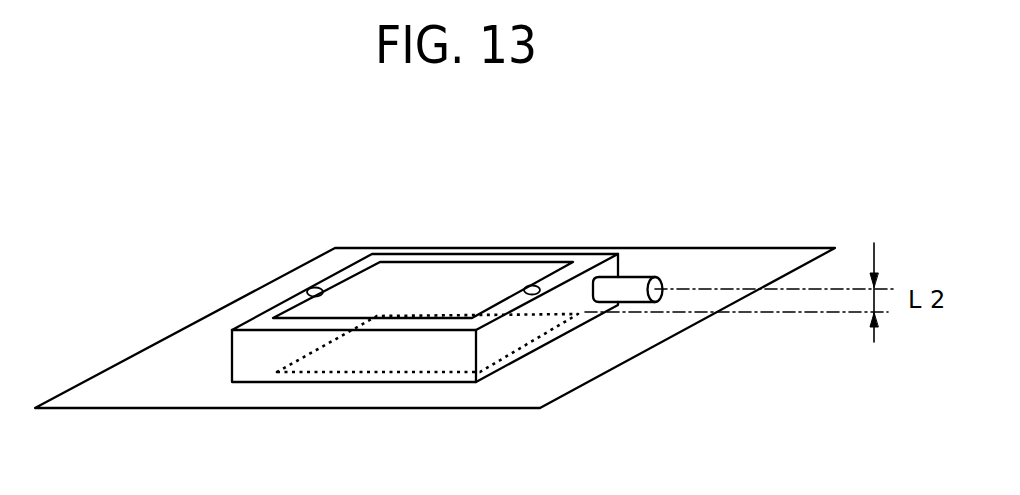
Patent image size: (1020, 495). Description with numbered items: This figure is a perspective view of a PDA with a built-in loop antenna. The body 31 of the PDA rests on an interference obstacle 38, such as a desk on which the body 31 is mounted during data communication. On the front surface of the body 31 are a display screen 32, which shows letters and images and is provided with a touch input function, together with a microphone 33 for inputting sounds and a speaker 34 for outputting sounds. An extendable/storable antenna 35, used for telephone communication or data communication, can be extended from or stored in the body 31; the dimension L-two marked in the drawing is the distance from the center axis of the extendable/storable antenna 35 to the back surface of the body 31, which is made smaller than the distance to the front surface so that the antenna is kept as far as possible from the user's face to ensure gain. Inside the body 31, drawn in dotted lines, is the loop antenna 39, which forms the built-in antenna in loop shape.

The body 31 is at (232, 370).
The display screen 32 is at (432, 272).
The microphone 33 is at (313, 288).
The speaker 34 is at (537, 287).
The extendable/storable antenna 35 is at (636, 277).
The interference obstacle 38 is at (735, 265).
The loop antenna 39 is at (543, 337).